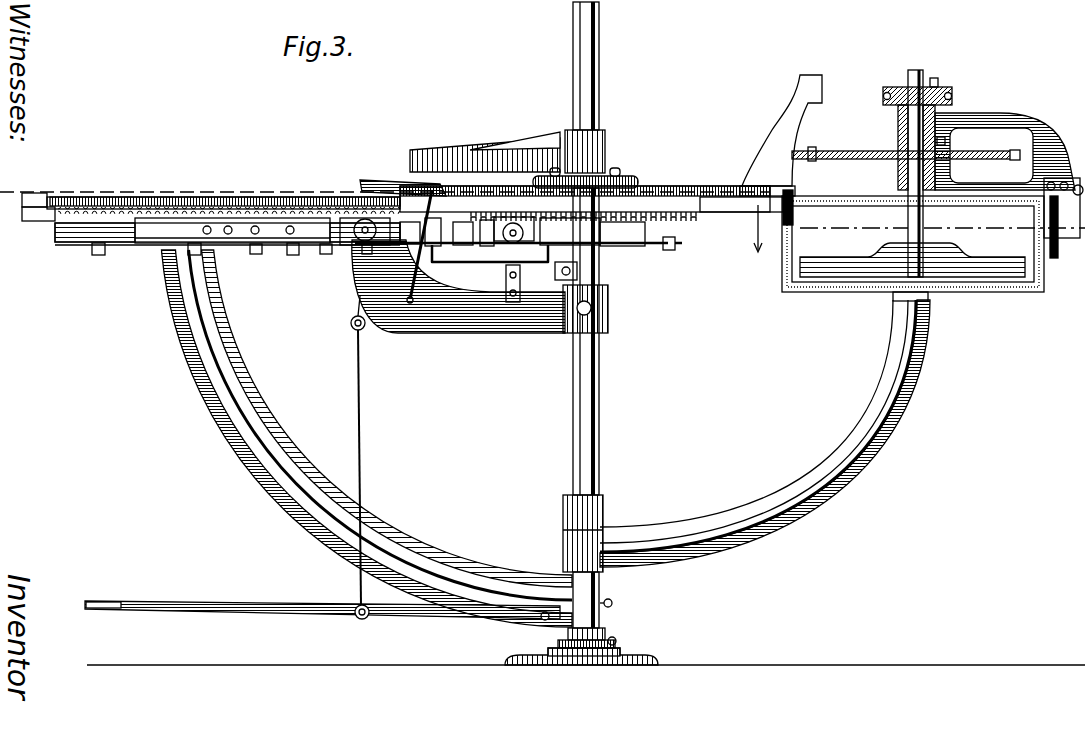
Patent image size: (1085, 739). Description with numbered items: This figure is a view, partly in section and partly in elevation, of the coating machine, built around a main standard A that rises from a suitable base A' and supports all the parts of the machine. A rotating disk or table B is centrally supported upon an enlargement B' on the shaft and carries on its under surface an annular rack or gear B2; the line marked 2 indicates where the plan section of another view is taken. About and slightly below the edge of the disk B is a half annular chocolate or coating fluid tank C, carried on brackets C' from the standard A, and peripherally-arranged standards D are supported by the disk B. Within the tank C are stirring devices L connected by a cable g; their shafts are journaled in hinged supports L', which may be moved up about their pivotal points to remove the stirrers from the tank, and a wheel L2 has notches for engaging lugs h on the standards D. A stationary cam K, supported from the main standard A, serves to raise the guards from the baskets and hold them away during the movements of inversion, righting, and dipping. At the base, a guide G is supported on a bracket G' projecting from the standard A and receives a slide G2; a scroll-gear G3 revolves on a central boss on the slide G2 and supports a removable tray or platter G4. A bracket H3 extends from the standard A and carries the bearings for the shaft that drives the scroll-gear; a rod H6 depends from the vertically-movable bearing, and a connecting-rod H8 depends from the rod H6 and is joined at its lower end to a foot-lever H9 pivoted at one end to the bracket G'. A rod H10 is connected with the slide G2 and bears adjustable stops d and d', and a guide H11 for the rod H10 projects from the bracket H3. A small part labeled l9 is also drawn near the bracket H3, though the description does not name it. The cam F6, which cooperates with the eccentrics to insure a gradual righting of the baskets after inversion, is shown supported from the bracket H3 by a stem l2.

The main standard A is at (585, 315).
The base A' is at (602, 646).
The rotating disk or table B is at (596, 190).
The enlargement on the shaft B' is at (574, 247).
The annular rack or gear B2 is at (746, 212).
The section line 2 is at (751, 228).
The half annular chocolate or coating fluid tank C is at (932, 251).
The brackets C' is at (772, 433).
The peripherally-arranged standards D is at (776, 126).
The guide G is at (227, 243).
The bracket G' is at (367, 438).
The slide G2 is at (252, 252).
The scroll-gear G3 is at (40, 208).
The removable tray or platter G4 is at (40, 198).
The cable g is at (884, 95).
The lugs h is at (820, 141).
The bracket H3 is at (490, 320).
The rod H6 is at (352, 308).
The connecting-rod H8 is at (364, 429).
The foot-lever H9 is at (284, 604).
The rod H10 is at (293, 255).
The guide H11 is at (545, 300).
The stationary cam K is at (455, 151).
The stirring devices L is at (912, 256).
The hinged supports L' is at (1005, 143).
The wheel L2 is at (850, 141).
The cam F6 is at (405, 183).
The stem l2 is at (416, 260).
The plate l9 is at (577, 272).
The adjustable stop d is at (511, 262).
The adjustable stop d' is at (679, 255).